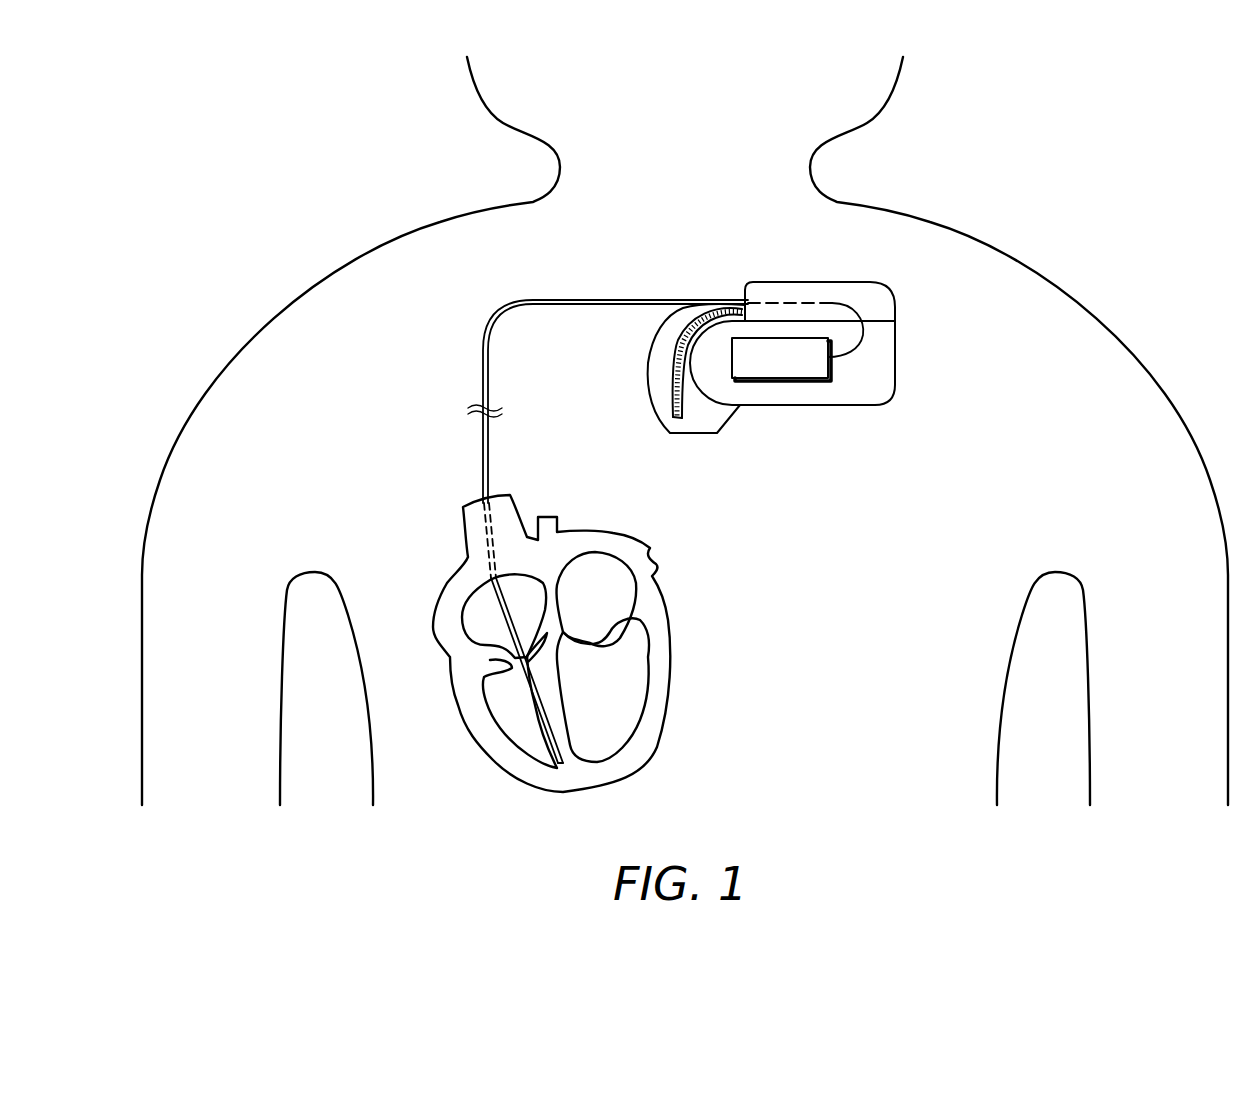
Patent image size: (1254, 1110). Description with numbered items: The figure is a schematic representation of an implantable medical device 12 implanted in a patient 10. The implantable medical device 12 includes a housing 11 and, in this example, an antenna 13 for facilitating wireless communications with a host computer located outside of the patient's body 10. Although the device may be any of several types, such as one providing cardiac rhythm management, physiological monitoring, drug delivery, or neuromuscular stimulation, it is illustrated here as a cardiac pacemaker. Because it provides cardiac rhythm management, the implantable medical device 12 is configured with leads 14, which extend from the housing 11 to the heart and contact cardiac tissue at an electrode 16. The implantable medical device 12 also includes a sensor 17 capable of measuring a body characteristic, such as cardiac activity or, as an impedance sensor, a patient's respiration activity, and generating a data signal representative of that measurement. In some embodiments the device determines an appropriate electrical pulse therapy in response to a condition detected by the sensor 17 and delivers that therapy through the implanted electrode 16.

The patient 10 is at (1084, 309).
The housing 11 is at (898, 358).
The implantable medical device 12 is at (822, 265).
The antenna 13 is at (671, 355).
The leads 14 is at (593, 299).
The electrode 16 is at (562, 766).
The sensor 17 is at (830, 363).